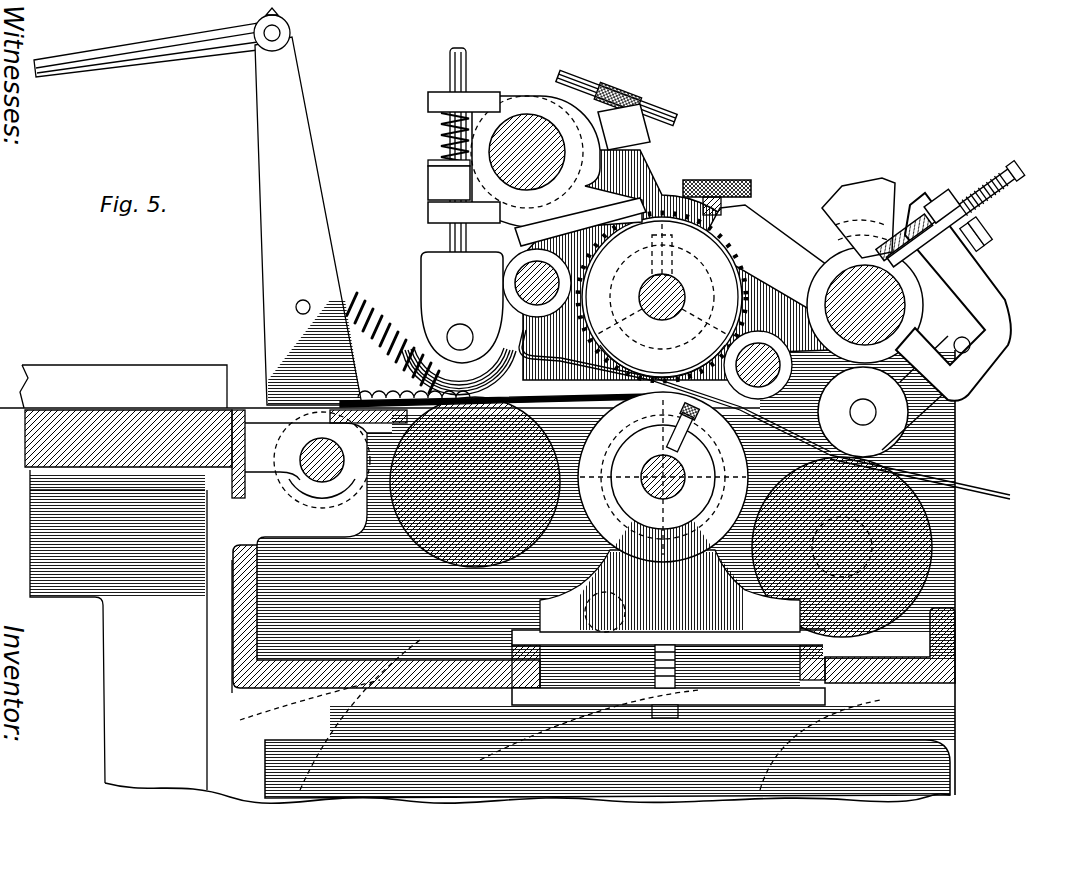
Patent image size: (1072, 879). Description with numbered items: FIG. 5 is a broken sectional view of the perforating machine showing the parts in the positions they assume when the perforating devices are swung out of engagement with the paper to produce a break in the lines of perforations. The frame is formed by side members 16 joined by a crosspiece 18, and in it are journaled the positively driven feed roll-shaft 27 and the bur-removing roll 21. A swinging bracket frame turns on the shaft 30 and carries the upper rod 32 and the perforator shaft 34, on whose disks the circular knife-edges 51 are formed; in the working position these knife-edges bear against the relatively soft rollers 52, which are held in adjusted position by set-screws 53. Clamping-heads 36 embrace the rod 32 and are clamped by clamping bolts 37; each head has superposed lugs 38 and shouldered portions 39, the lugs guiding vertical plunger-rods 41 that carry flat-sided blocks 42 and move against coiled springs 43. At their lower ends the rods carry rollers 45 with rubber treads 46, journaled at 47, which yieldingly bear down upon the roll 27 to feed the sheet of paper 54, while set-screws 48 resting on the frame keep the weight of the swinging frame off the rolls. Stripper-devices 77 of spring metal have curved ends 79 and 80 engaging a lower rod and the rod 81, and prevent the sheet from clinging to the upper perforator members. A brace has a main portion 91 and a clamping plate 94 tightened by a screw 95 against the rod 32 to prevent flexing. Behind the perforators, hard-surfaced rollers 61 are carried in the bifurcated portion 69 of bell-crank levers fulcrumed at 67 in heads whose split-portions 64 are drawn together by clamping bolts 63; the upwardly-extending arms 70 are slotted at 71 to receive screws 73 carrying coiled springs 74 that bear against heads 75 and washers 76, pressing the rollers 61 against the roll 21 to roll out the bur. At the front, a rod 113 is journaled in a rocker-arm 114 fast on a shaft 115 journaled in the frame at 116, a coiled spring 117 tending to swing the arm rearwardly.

The rod 113 is at (146, 45).
The rocker-arm 114 is at (308, 206).
The side members 16 is at (477, 576).
The crosspiece 18 is at (607, 754).
The shaft 115 is at (312, 452).
The journal 116 is at (305, 490).
The roll-shaft 27 is at (475, 482).
The roll 21 is at (925, 548).
The shaft 30 is at (820, 258).
The main portion 91 is at (735, 232).
The shaft 34 is at (672, 296).
The knife-edges 51 is at (598, 232).
The curved end 80 is at (735, 345).
The stripper-devices 77 is at (662, 352).
The plunger-rods 41 is at (455, 58).
The clamping-heads 36 is at (475, 98).
The upper rod 32 is at (527, 130).
The lugs 38 is at (428, 100).
The coiled springs 43 is at (445, 130).
The shouldered portions 39 is at (428, 162).
The flat-sided blocks 42 is at (428, 185).
The screw 95 is at (628, 112).
The clamping bolts 37 is at (640, 128).
The set-screws 48 is at (715, 180).
The clamping plate 94 is at (520, 236).
The rollers 45 is at (459, 371).
The curved end 79 is at (520, 268).
The journal 47 is at (460, 324).
The coiled spring 117 is at (375, 298).
The sheet of paper 54 is at (985, 455).
The rubber treads 46 is at (540, 358).
The rod 81 is at (780, 365).
The hard-surfaced rollers 61 is at (908, 432).
The bifurcated portion 69 is at (885, 395).
The split-portions 64 is at (822, 215).
The clamping bolts 63 is at (880, 225).
The upwardly-extending arms 70 is at (985, 300).
The fulcrum 67 is at (970, 345).
The heads 75 is at (1010, 175).
The screws 73 is at (910, 235).
The slots 71 is at (935, 200).
The coiled springs 74 is at (985, 212).
The washers 76 is at (980, 240).
The rollers 52 is at (670, 512).
The set-screws 53 is at (692, 442).